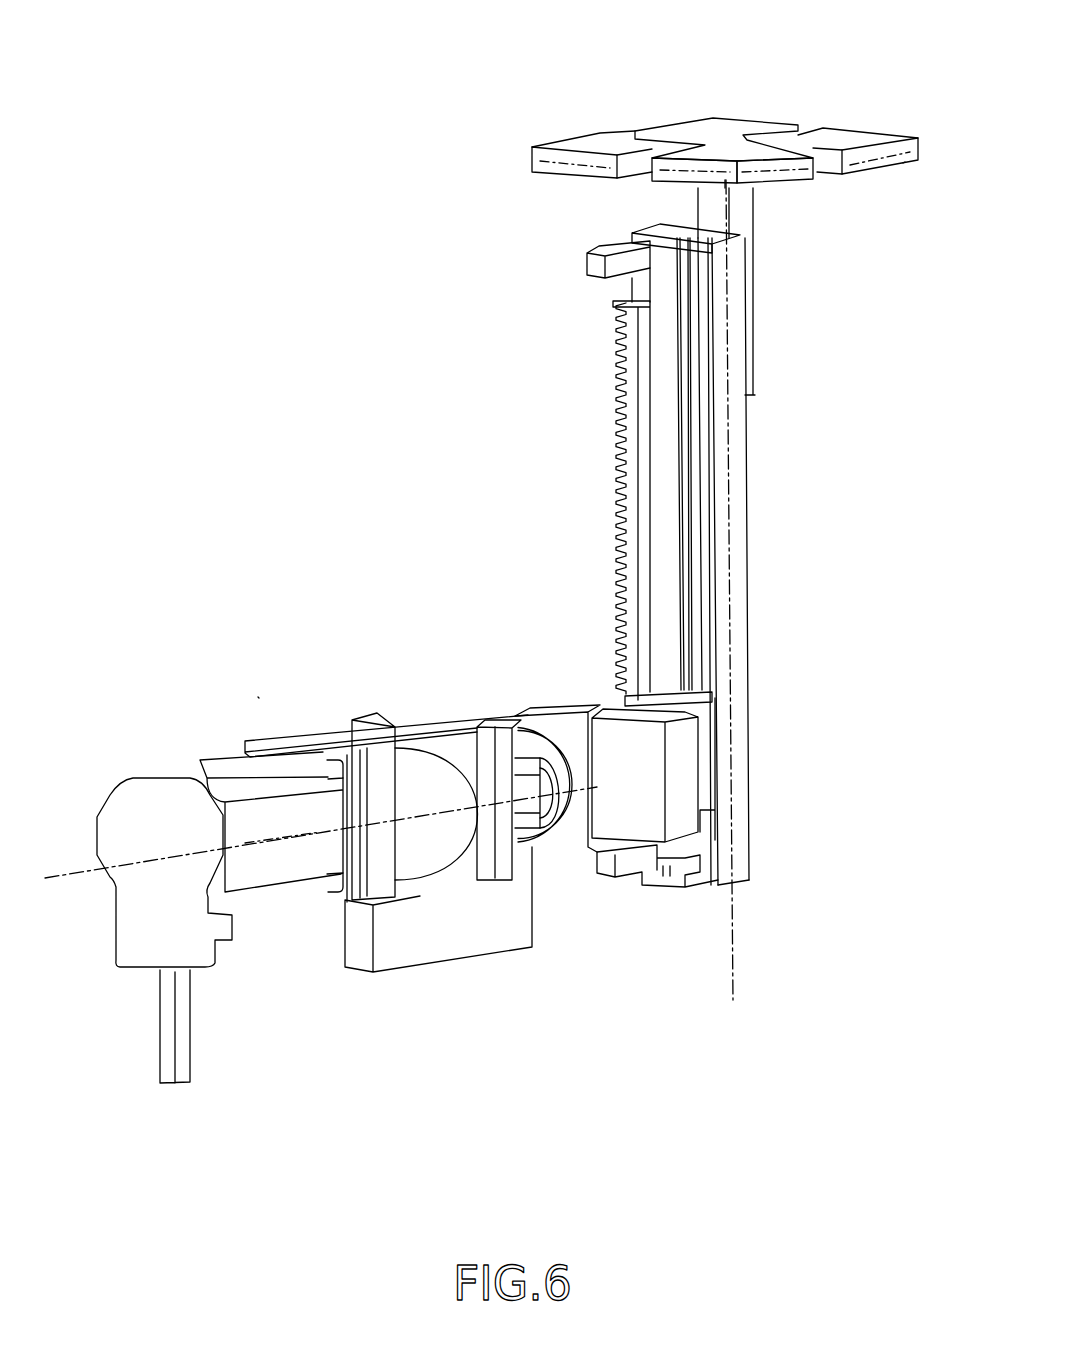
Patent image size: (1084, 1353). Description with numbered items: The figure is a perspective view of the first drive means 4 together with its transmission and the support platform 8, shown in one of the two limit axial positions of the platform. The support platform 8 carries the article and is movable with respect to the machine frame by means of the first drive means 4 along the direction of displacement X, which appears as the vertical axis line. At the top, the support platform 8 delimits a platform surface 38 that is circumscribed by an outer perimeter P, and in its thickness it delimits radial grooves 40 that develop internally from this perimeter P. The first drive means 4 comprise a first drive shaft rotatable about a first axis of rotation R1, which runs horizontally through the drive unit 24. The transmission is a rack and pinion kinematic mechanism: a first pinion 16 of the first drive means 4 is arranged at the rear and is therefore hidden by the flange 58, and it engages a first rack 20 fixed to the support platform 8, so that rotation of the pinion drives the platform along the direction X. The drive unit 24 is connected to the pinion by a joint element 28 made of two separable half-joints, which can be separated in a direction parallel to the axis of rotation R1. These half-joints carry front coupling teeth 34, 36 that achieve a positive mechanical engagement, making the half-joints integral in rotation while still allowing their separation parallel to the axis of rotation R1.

The first drive means 4 is at (258, 697).
The support platform 8 is at (880, 180).
The first pinion 16 is at (575, 707).
The first rack 20 is at (592, 362).
The drive unit 24 is at (277, 917).
The joint element 28 is at (538, 860).
The front coupling tooth 34 is at (527, 807).
The front coupling tooth 36 is at (515, 700).
The platform surface 38 is at (720, 141).
The radial groove 40 is at (636, 149).
The flange 58 is at (577, 841).
The outer perimeter P is at (904, 163).
The first axis of rotation R1 is at (48, 870).
The direction of displacement X is at (738, 998).